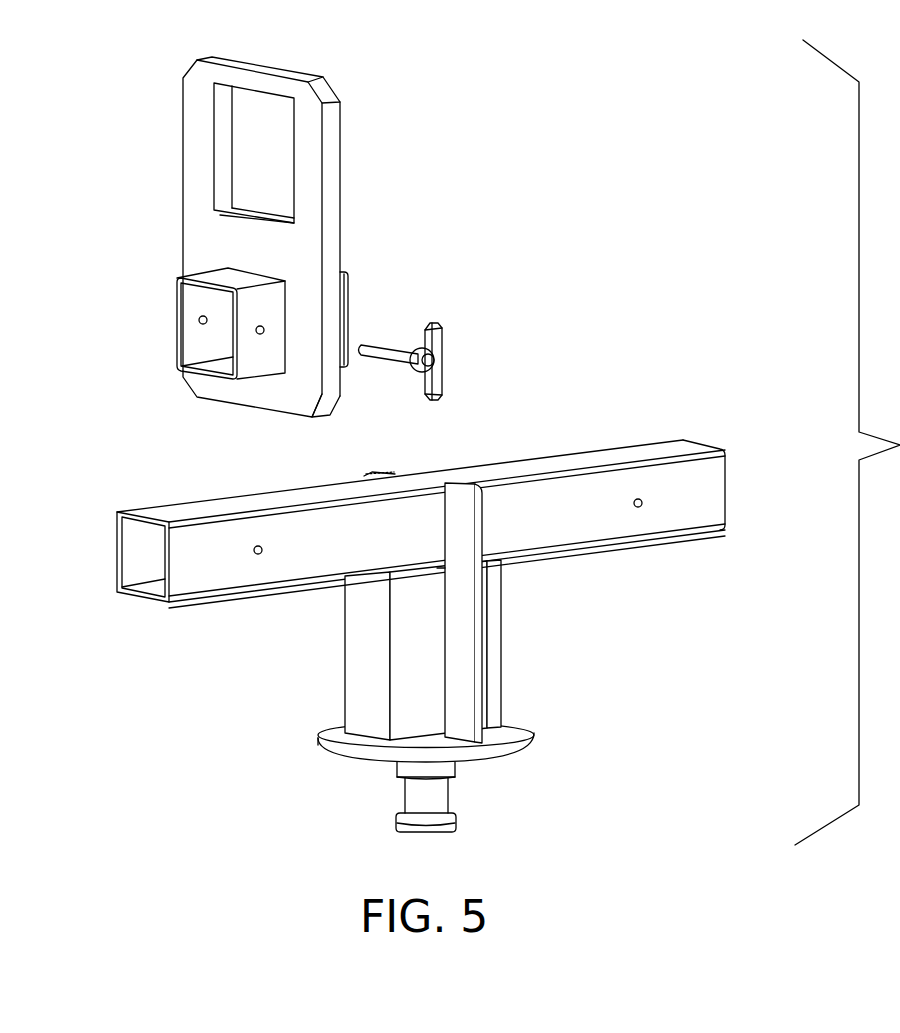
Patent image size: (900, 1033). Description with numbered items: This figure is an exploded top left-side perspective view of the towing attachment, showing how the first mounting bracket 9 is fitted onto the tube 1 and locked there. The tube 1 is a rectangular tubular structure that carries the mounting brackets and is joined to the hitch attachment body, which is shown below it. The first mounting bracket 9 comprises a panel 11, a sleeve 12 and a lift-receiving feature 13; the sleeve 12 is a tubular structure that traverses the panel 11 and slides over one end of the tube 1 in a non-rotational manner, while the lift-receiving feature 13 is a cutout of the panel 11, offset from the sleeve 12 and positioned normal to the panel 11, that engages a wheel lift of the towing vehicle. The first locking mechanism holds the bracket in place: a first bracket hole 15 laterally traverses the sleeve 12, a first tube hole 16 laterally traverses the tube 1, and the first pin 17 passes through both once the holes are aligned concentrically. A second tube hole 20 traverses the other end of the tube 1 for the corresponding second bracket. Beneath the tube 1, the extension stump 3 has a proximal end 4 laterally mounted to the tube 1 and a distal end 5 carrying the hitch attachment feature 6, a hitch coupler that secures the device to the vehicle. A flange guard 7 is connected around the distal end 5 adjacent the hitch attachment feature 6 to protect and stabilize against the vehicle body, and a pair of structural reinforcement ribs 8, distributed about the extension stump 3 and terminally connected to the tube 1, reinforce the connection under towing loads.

The tube 1 is at (573, 480).
The extension stump 3 is at (355, 688).
The proximal end 4 is at (515, 570).
The distal end 5 is at (333, 734).
The hitch attachment feature 6 is at (440, 793).
The flange guard 7 is at (530, 740).
The plurality of structural reinforcement ribs 8 is at (364, 476).
The first mounting bracket 9 is at (210, 237).
The panel 11 is at (196, 233).
The sleeve 12 is at (192, 348).
The lift-receiving feature 13 is at (232, 160).
The first bracket hole 15 is at (268, 336).
The first tube hole 16 is at (266, 556).
The first pin 17 is at (432, 360).
The second tube hole 20 is at (647, 509).